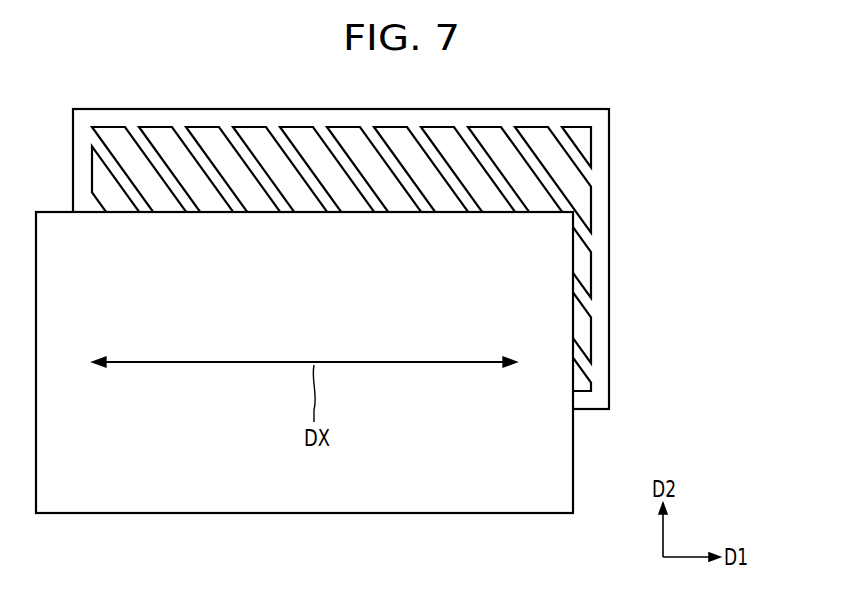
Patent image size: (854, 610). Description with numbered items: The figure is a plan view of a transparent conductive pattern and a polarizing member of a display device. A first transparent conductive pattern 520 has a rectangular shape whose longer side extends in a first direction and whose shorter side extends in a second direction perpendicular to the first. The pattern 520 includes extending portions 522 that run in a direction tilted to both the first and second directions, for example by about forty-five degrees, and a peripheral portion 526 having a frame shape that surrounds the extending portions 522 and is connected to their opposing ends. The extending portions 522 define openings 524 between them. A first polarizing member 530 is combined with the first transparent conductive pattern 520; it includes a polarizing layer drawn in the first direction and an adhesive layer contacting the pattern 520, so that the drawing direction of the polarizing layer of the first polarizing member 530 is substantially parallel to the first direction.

The first transparent conductive pattern 520 is at (396, 259).
The extending portion 522 is at (533, 166).
The opening 524 is at (577, 138).
The peripheral portion 526 is at (600, 192).
The first polarizing member 530 is at (566, 445).